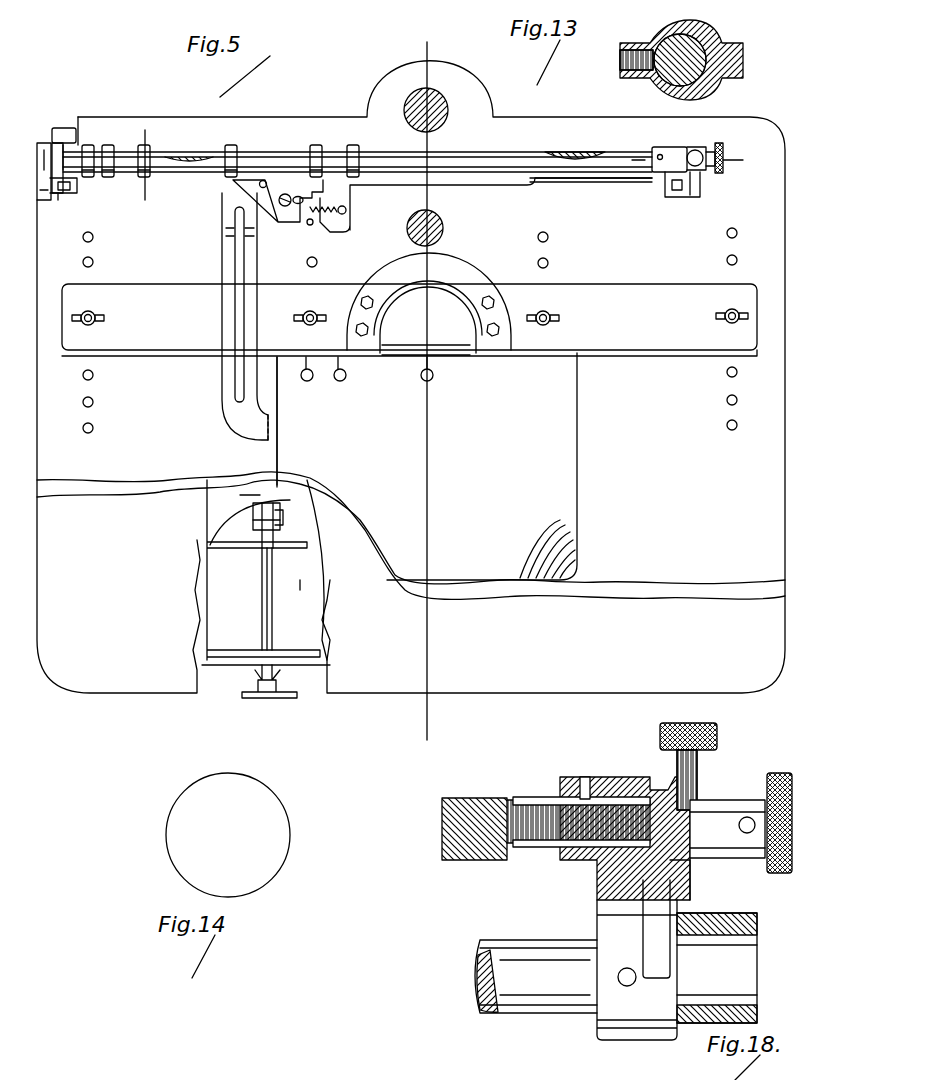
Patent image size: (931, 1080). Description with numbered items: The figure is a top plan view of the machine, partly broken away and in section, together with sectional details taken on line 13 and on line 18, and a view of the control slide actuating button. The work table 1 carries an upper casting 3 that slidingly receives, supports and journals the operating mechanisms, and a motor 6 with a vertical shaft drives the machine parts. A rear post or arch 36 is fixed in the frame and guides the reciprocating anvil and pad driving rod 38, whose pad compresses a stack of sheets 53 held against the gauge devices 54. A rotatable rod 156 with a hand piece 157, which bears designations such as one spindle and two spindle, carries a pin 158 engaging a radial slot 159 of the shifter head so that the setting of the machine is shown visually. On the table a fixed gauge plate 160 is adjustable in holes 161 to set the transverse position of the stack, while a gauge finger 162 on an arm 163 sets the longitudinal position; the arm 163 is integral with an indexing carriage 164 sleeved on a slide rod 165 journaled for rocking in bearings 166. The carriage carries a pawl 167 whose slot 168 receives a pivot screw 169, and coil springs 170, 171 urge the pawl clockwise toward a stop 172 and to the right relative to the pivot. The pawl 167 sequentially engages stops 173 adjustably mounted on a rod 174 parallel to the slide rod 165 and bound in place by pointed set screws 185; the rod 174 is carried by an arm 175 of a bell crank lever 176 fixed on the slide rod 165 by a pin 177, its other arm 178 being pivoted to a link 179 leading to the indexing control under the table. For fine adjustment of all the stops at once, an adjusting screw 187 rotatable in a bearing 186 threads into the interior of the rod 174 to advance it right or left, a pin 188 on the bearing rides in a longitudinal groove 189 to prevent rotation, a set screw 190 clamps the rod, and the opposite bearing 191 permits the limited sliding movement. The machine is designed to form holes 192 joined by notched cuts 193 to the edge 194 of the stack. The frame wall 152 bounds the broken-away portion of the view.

In FIG. 5, the work table 1 is at (103, 688).
In FIG. 5, the upper casting 3 is at (237, 654).
In FIG. 5, the motor 6 is at (438, 742).
In FIG. 5, the section line 13— 13 is at (137, 204).
In FIG. 5, the section line 18— 18 is at (640, 168).
In FIG. 5, the rear post or arch 36 is at (447, 97).
In FIG. 5, the anvil and pad driving rod 38 is at (443, 222).
In FIG. 5, the stack of sheets 53 is at (578, 505).
In FIG. 5, the gauge devices 54 is at (480, 275).
In FIG. 5, the frame wall 152 is at (235, 497).
In FIG. 5, the rotatable rod 156 is at (262, 575).
In FIG. 5, the actuating hand piece 157 is at (280, 698).
In FIG. 14, the actuating hand piece 157 is at (285, 810).
In FIG. 5, the pin 158 is at (283, 512).
In FIG. 5, the radial slot 159 is at (253, 523).
In FIG. 5, the fixed gauge plate 160 is at (650, 337).
In FIG. 5, the holes 161 is at (727, 400).
In FIG. 5, the gauge finger 162 is at (272, 428).
In FIG. 5, the arm 163 is at (225, 272).
In FIG. 5, the indexing carriage 164 is at (352, 210).
In FIG. 5, the slide rod 165 is at (545, 155).
In FIG. 18, the slide rod 165 is at (530, 1018).
In FIG. 5, the bearings 166 is at (40, 175).
In FIG. 18, the bearings 166 is at (755, 920).
In FIG. 5, the pawl 167 is at (278, 216).
In FIG. 5, the slot 168 is at (300, 194).
In FIG. 5, the screw or pivot pin 169 is at (286, 194).
In FIG. 5, the coil spring 170 is at (350, 225).
In FIG. 5, the coil spring 171 is at (313, 225).
In FIG. 5, the stop 172 is at (265, 180).
In FIG. 5, the stops 173 is at (142, 150).
In FIG. 13, the stops 173 is at (742, 47).
In FIG. 5, the rod 174 is at (170, 150).
In FIG. 13, the rod 174 is at (692, 34).
In FIG. 18, the rod 174 is at (470, 800).
In FIG. 5, the arm of bell crank lever 175 is at (668, 188).
In FIG. 18, the arm of bell crank lever 175 is at (672, 865).
In FIG. 18, the bell crank lever 176 is at (597, 905).
In FIG. 18, the pin 177 is at (622, 968).
In FIG. 5, the other arm of bell crank lever 178 is at (60, 135).
In FIG. 5, the link 179 is at (66, 135).
In FIG. 5, the pointed set screws 185 is at (575, 150).
In FIG. 13, the pointed set screws 185 is at (637, 78).
In FIG. 18, the bearing 186 is at (720, 800).
In FIG. 5, the adjusting screw 187 is at (724, 158).
In FIG. 18, the adjusting screw 187 is at (775, 773).
In FIG. 5, the pin 188 is at (660, 150).
In FIG. 18, the pin 188 is at (587, 777).
In FIG. 5, the longitudinal groove 189 is at (648, 157).
In FIG. 18, the longitudinal groove 189 is at (530, 797).
In FIG. 5, the set screw 190 is at (700, 150).
In FIG. 18, the set screw 190 is at (700, 740).
In FIG. 5, the opposite bearing 191 is at (60, 198).
In FIG. 5, the holes 192 is at (432, 380).
In FIG. 5, the notched cuts 193 is at (430, 357).
In FIG. 5, the edge of the stack 194 is at (395, 352).